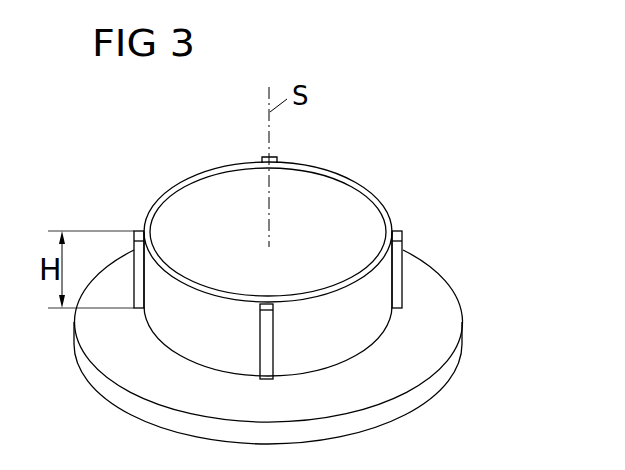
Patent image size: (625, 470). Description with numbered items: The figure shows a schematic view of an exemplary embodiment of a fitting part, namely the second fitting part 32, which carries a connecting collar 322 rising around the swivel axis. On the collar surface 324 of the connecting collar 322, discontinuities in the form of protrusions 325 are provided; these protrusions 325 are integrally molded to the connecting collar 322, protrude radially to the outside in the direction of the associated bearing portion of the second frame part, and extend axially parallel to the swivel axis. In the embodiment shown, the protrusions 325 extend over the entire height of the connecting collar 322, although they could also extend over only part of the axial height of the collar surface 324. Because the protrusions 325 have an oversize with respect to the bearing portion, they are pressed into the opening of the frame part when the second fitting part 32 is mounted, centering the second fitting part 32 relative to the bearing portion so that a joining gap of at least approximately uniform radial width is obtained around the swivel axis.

The second fitting part 32 is at (435, 318).
The connecting collar 322 is at (385, 198).
The collar surface 324 is at (382, 298).
The protrusions 325 is at (263, 157).